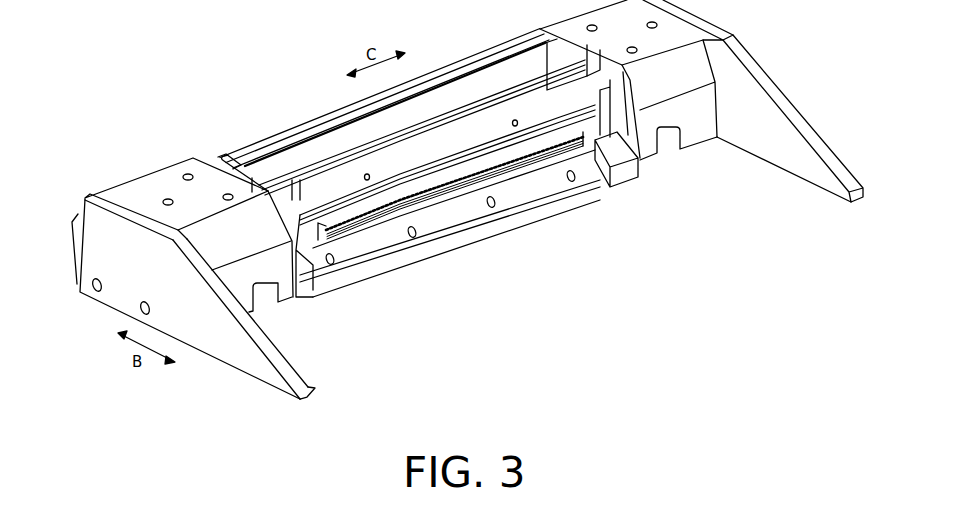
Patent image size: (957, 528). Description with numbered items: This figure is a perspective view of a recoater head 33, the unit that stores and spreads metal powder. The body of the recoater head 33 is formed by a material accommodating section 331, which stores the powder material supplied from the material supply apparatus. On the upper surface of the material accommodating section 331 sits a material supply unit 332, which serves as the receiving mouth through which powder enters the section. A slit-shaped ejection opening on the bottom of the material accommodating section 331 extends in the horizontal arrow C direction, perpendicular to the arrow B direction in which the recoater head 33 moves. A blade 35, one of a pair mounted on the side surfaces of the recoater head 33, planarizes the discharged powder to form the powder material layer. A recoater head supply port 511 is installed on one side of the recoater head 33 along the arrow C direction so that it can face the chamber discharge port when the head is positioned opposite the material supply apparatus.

The recoater head 33 is at (214, 70).
The material accommodating section 331 is at (323, 183).
The material supply unit 332 is at (526, 62).
The blade 35 is at (567, 197).
The recoater head supply port 511 is at (380, 212).